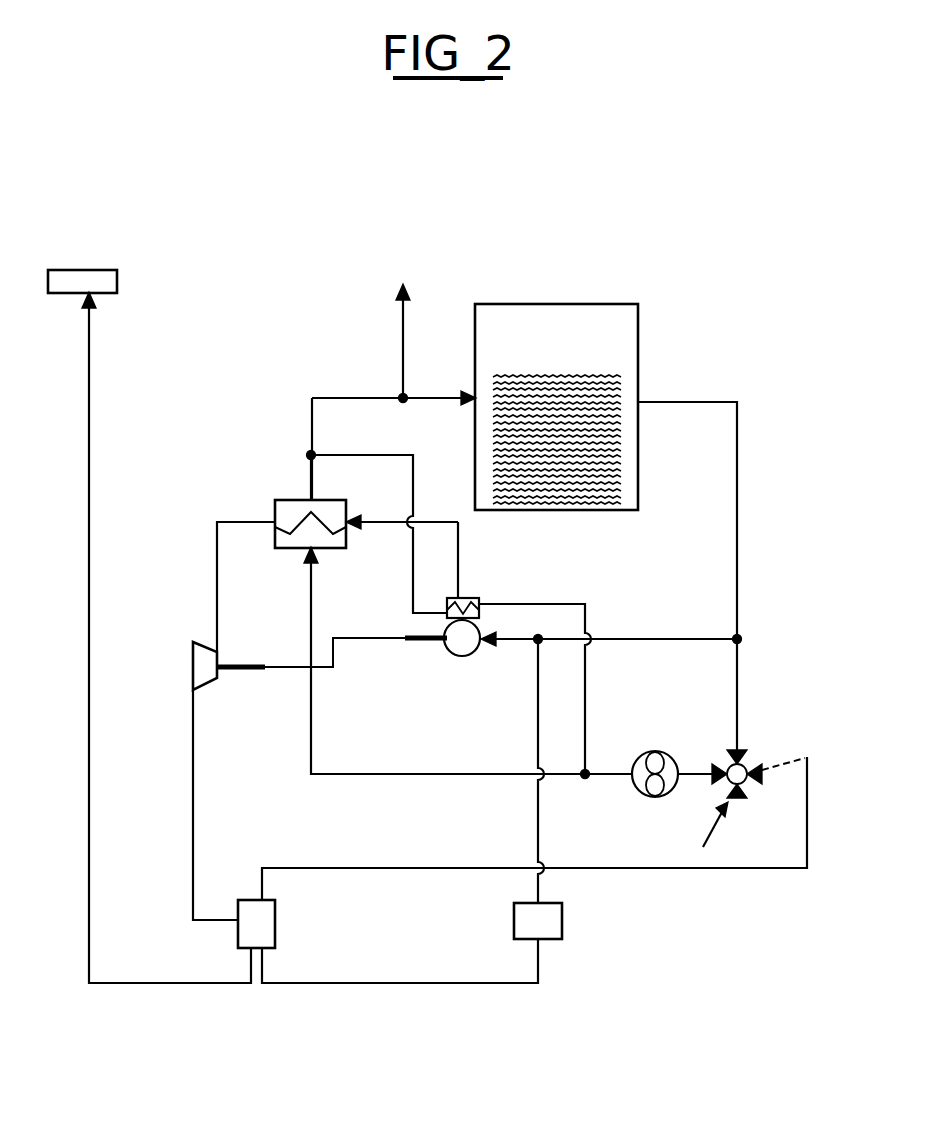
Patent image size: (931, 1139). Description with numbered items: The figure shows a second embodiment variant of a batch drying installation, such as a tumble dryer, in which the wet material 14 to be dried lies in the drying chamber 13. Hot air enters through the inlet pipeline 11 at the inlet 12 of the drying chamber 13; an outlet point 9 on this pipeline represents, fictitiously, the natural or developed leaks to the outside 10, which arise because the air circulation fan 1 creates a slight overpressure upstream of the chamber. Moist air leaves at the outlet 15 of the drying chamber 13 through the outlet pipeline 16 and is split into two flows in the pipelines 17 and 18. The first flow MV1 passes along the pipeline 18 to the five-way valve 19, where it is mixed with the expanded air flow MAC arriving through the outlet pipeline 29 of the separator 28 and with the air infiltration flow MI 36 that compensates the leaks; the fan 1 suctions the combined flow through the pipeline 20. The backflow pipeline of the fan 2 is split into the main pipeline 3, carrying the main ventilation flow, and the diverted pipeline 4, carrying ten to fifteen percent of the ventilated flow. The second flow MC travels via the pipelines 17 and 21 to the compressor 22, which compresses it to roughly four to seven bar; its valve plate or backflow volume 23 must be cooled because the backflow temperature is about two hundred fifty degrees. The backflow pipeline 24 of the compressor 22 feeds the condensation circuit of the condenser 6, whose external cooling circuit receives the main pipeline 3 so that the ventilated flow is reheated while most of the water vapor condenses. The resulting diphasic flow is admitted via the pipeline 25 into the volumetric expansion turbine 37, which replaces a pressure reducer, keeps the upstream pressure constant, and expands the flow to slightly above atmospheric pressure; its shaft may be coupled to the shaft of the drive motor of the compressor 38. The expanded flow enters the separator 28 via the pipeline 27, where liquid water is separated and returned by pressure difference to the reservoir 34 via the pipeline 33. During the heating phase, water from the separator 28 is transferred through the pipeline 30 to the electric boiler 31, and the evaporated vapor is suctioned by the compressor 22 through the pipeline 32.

The air circulation fan 1 is at (640, 797).
The backflow pipeline of the fan 2 is at (590, 777).
The main pipeline 3 is at (480, 776).
The diverted pipeline 4 is at (585, 672).
The condenser 6 is at (290, 550).
The outlet point 9 is at (403, 396).
The natural or developed leaks to the outside 10 is at (403, 320).
The inlet pipeline 11 is at (432, 392).
The inlet of the drying chamber 12 is at (470, 404).
The drying chamber 13 is at (537, 302).
The wet material 14 is at (578, 504).
The outlet of the drying chamber 15 is at (640, 403).
The outlet pipeline 16 is at (737, 513).
The pipeline 17 is at (715, 639).
The pipeline 18 is at (737, 740).
The five-way valve 19 is at (742, 766).
The pipeline 20 is at (702, 773).
The pipeline 21 is at (512, 640).
The compressor 22 is at (466, 652).
The valve plate or backflow volume 23 is at (466, 598).
The backflow pipeline of the compressor 24 is at (424, 522).
The pipeline 25 is at (217, 584).
The pipeline 27 is at (193, 860).
The separator 28 is at (238, 943).
The outlet pipeline of the separator 29 is at (800, 757).
The pipeline 30 is at (312, 983).
The electric boiler 31 is at (562, 918).
The pipeline 32 is at (538, 722).
The pipeline 33 is at (85, 430).
The reservoir 34 is at (89, 268).
The air infiltration flow MI 36 is at (705, 830).
The volumetric expansion turbine 37 is at (193, 660).
The shaft of the drive motor of the compressor 38 is at (405, 640).